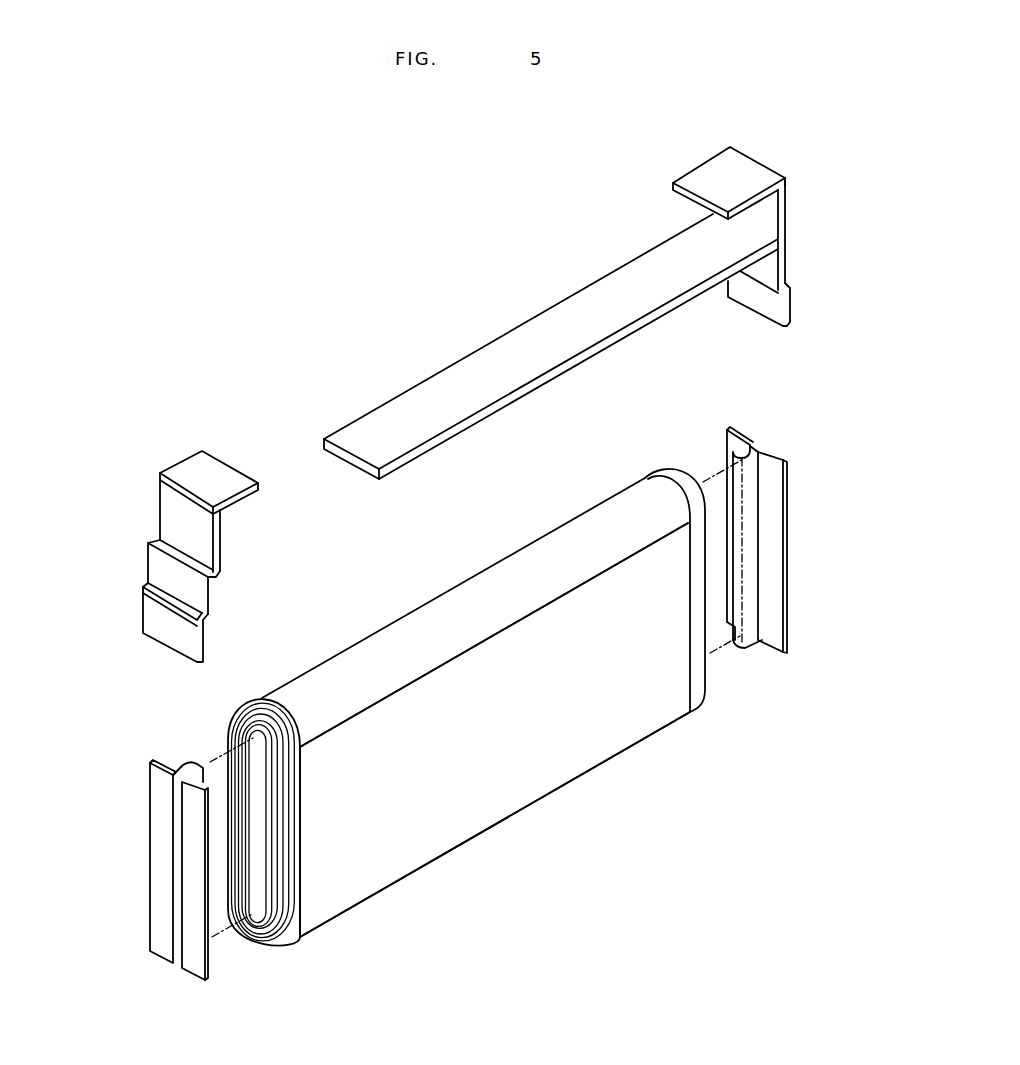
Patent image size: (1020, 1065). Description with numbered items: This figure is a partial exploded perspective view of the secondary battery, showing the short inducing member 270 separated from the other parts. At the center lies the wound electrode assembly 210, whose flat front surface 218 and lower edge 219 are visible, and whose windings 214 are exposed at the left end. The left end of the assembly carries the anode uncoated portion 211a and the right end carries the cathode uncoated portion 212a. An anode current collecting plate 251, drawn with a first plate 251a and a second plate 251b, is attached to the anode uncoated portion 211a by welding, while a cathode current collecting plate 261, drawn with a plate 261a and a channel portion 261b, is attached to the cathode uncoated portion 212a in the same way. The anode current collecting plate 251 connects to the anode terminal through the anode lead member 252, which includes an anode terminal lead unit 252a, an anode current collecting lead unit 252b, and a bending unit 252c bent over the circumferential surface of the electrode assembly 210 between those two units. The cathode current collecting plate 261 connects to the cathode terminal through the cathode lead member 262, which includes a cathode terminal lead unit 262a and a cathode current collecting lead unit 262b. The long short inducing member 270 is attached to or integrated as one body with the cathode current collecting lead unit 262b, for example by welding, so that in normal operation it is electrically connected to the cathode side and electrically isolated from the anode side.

The electrode assembly 210 is at (553, 798).
The anode uncoated portion 211a is at (292, 912).
The cathode uncoated portion 212a is at (700, 683).
The wound electrode assembly 214 is at (253, 918).
The front surface of battery cell 218 is at (468, 795).
The bottom edge of battery cell 219 is at (385, 887).
The anode current collecting plate 251 is at (138, 837).
The first plate of first fixing member 251a is at (157, 897).
The second plate of first fixing member 251b is at (186, 765).
The anode lead member 252 is at (163, 528).
The anode terminal lead unit 252a is at (190, 468).
The anode current collecting lead unit 252b is at (155, 567).
The bending unit 252c is at (162, 545).
The cathode current collecting plate 261 is at (777, 521).
The plate of third fixing member 261a is at (775, 608).
The channel portion of third fixing member 261b is at (730, 440).
The cathode lead member 262 is at (737, 213).
The cathode terminal lead unit 262a is at (708, 178).
The cathode current collecting lead unit 262b is at (782, 263).
The short inducing member 270 is at (483, 362).